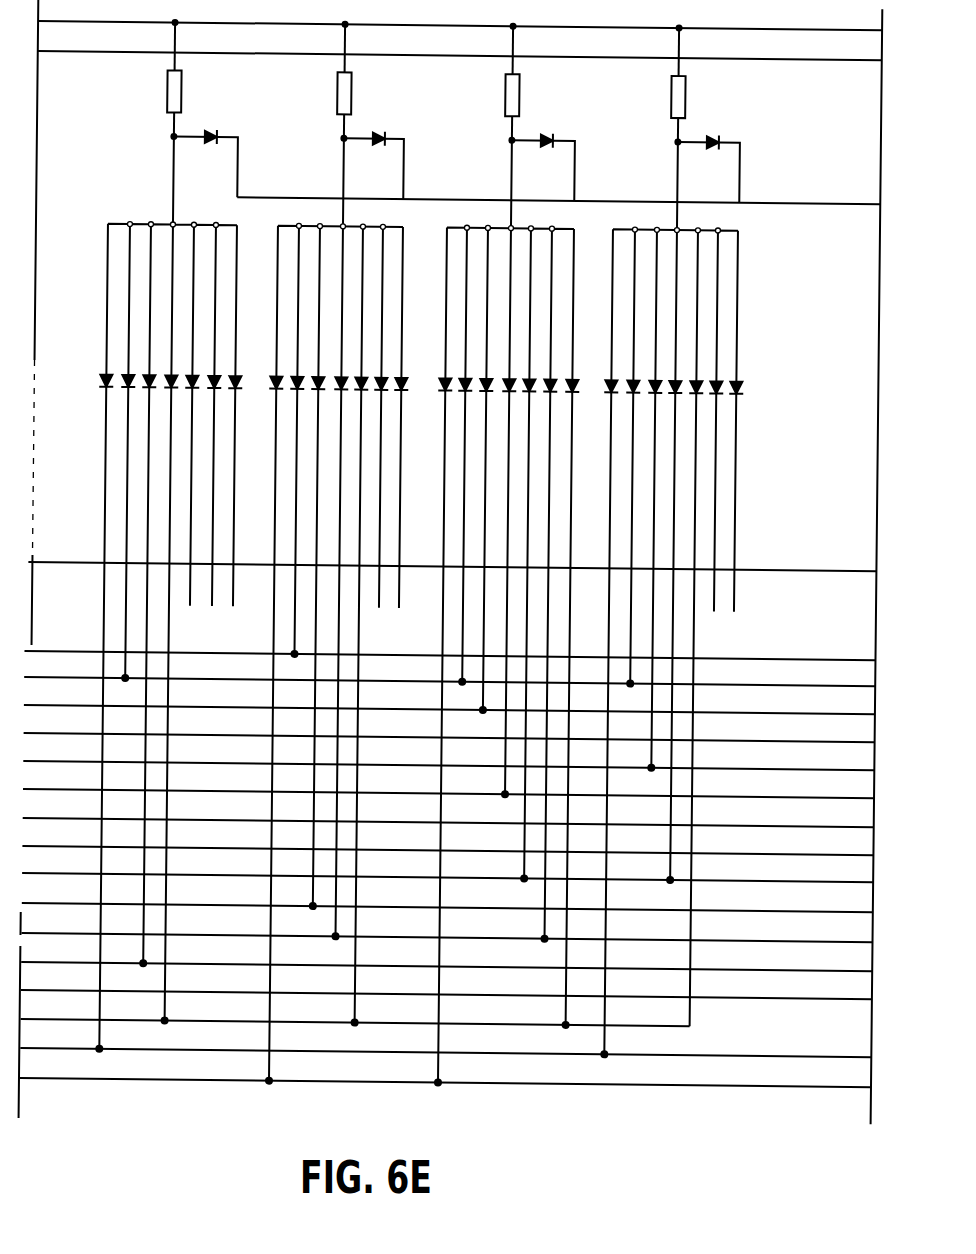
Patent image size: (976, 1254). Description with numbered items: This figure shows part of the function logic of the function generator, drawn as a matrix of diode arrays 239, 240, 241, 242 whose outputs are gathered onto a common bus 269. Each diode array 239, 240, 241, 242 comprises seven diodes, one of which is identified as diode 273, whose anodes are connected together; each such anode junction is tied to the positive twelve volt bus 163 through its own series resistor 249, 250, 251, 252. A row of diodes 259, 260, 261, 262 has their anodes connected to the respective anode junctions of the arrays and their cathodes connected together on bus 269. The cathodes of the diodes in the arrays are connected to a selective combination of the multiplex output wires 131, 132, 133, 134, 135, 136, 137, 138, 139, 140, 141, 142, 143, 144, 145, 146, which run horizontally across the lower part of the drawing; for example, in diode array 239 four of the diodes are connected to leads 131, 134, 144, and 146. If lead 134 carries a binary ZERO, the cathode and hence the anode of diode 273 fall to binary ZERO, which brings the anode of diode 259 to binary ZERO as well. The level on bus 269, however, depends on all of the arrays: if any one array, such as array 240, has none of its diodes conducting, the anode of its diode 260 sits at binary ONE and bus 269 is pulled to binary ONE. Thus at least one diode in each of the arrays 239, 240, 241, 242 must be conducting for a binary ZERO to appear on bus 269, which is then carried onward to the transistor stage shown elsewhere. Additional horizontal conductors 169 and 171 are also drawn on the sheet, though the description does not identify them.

The multiplex output wire 131 is at (824, 1047).
The multiplex output wire 132 is at (824, 1077).
The multiplex output wire 133 is at (812, 650).
The multiplex output wire 134 is at (818, 676).
The multiplex output wire 135 is at (818, 704).
The multiplex output wire 136 is at (822, 732).
The multiplex output wire 137 is at (822, 760).
The multiplex output wire 138 is at (822, 788).
The multiplex output wire 139 is at (822, 817).
The multiplex output wire 140 is at (826, 845).
The multiplex output wire 141 is at (826, 872).
The multiplex output wire 142 is at (826, 902).
The multiplex output wire 143 is at (826, 932).
The multiplex output wire 144 is at (826, 961).
The multiplex output wire 145 is at (826, 989).
The multiplex output wire 146 is at (626, 1020).
The positive 12 volt bus 163 is at (800, 26).
The line 169 is at (808, 561).
The line 171 is at (808, 56).
The diode array 239 is at (137, 217).
The diode array 240 is at (316, 217).
The diode array 241 is at (478, 219).
The diode array 242 is at (647, 219).
The resistor 249 is at (181, 92).
The resistor 250 is at (351, 94).
The resistor 251 is at (519, 95).
The resistor 252 is at (685, 97).
The diode 259 is at (211, 143).
The diode 260 is at (379, 143).
The diode 261 is at (547, 143).
The diode 262 is at (713, 143).
The bus 269 is at (284, 194).
The diode 273 is at (129, 375).